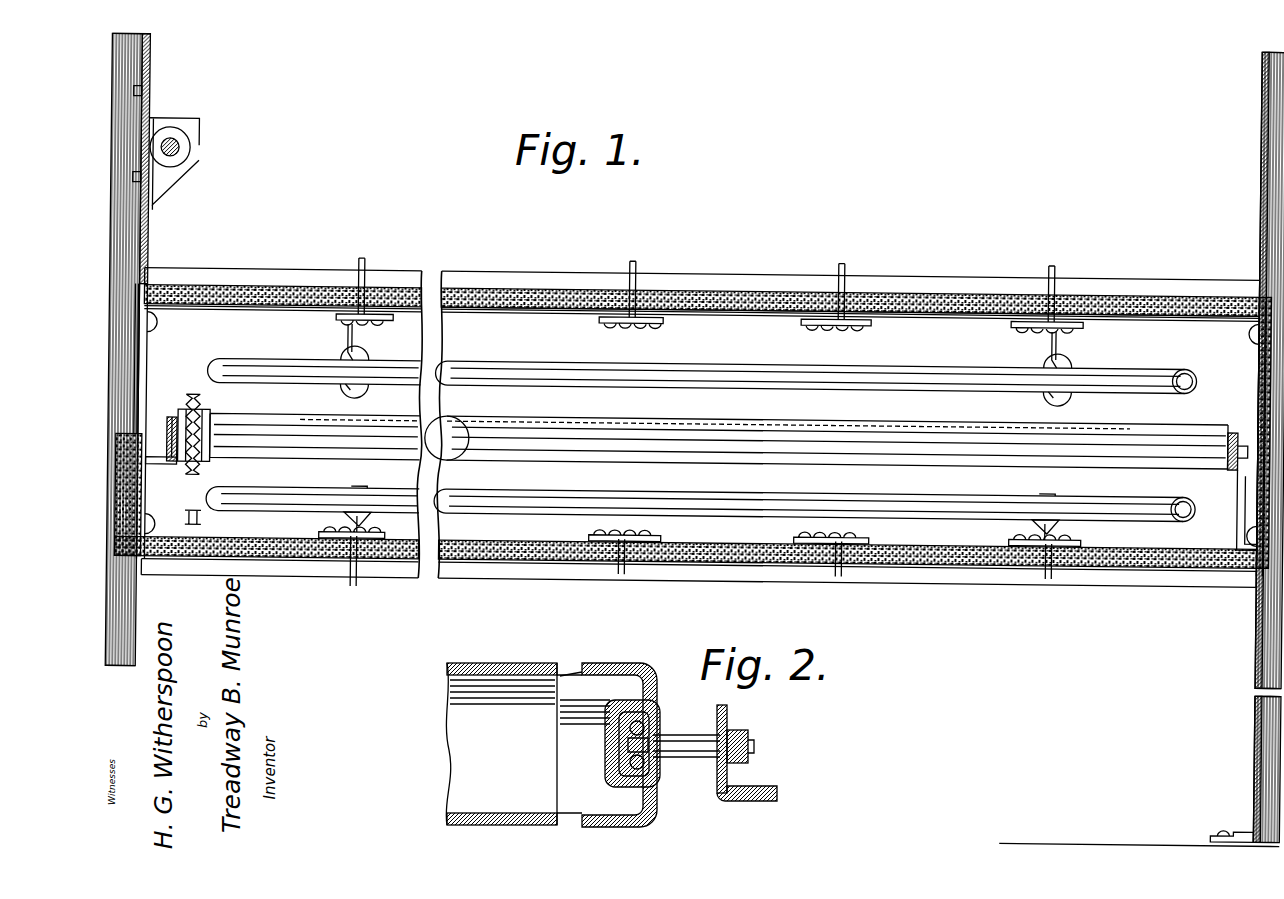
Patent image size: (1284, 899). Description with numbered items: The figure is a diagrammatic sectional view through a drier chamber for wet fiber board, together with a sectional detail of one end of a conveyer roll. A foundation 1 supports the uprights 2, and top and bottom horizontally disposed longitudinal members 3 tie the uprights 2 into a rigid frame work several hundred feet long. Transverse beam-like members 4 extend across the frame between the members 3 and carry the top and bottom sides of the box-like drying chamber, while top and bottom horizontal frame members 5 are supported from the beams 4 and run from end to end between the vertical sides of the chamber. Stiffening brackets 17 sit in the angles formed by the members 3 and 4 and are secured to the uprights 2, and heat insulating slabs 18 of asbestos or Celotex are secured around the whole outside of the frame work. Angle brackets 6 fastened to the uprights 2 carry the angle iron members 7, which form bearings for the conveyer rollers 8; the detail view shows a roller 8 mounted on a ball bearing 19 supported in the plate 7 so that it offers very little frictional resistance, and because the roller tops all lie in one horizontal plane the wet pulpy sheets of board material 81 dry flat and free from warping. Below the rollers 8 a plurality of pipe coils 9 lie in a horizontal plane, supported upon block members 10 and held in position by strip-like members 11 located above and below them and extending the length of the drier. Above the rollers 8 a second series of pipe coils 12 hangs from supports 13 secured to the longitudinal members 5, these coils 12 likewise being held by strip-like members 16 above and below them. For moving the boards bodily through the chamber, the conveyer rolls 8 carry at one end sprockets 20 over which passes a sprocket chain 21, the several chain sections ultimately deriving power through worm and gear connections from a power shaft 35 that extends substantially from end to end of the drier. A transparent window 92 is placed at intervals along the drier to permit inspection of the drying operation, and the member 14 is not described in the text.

In FIG. 1, the foundation 1 is at (1225, 830).
In FIG. 1, the upright 2 is at (121, 84).
In FIG. 1, the longitudinal member 3 is at (150, 288).
In FIG. 1, the transverse beam 4 is at (468, 274).
In FIG. 1, the horizontal frame member 5 is at (370, 278).
In FIG. 1, the angle bracket 6 is at (160, 472).
In FIG. 1, the angle iron member 7 is at (167, 432).
In FIG. 2, the angle iron member 7 is at (717, 780).
In FIG. 1, the conveyer roller 8 is at (262, 447).
In FIG. 2, the conveyer roller 8 is at (497, 663).
In FIG. 1, the pipe coil 9 is at (322, 502).
In FIG. 1, the block member 10 is at (345, 523).
In FIG. 1, the strip member 11 is at (362, 505).
In FIG. 1, the upper pipe coil 12 is at (267, 366).
In FIG. 1, the support 13 is at (346, 343).
In FIG. 1, the roller chain 14 is at (390, 320).
In FIG. 1, the strip member 16 is at (350, 388).
In FIG. 1, the stiffening bracket 17 is at (168, 320).
In FIG. 1, the heat insulating slab 18 is at (253, 295).
In FIG. 2, the ball bearing 19 is at (627, 768).
In FIG. 1, the sprocket 20 is at (205, 432).
In FIG. 1, the sprocket chain 21 is at (190, 400).
In FIG. 1, the power shaft 35 is at (189, 156).
In FIG. 1, the board material 81 is at (515, 422).
In FIG. 1, the transparent window 92 is at (135, 370).